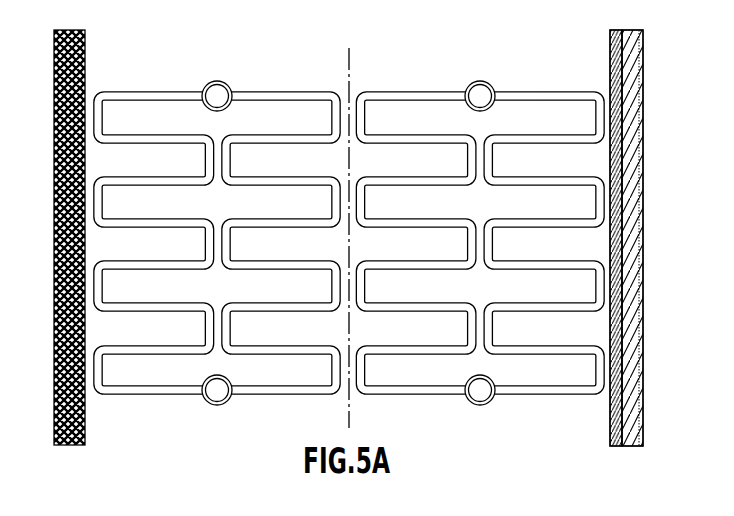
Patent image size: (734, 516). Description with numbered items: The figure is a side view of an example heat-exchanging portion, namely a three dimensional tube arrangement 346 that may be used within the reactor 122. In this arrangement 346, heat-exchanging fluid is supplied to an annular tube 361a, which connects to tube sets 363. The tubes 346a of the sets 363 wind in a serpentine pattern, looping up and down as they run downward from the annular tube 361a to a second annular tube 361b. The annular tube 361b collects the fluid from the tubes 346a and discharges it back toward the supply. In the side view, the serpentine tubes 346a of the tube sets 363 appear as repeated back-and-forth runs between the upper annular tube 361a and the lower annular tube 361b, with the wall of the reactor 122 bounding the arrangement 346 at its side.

The reactor 122 is at (643, 62).
The three dimensional tube arrangement 346 is at (532, 208).
The tubes 346a is at (589, 144).
The annular tube 361a is at (400, 242).
The annular tube 361b is at (226, 403).
The tube sets 363 is at (400, 242).